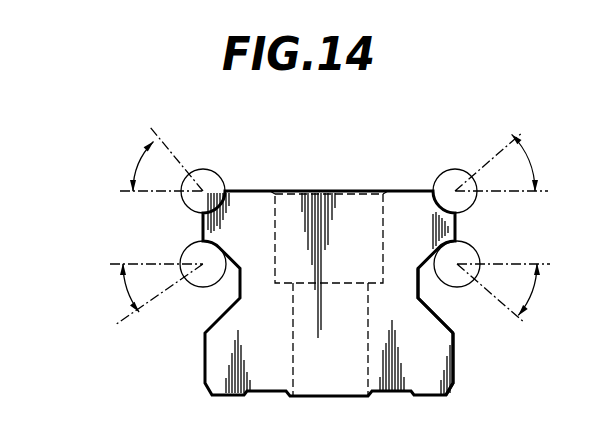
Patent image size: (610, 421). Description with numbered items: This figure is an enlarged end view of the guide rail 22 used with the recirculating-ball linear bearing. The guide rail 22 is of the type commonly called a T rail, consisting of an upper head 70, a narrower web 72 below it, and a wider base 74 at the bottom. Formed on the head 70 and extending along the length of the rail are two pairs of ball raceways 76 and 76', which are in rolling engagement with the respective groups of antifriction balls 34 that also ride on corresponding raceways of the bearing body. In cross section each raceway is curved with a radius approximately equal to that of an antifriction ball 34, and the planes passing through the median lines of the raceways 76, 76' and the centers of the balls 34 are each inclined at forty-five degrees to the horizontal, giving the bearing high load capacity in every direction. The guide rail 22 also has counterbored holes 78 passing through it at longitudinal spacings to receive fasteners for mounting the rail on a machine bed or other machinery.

The guide rail 22 is at (340, 176).
The antifriction balls 34 is at (209, 170).
The head 70 is at (400, 207).
The web 72 is at (408, 292).
The base 74 is at (447, 363).
The ball raceways 76 is at (233, 234).
The ball raceways 76' is at (470, 222).
The counterbored holes 78 is at (367, 352).